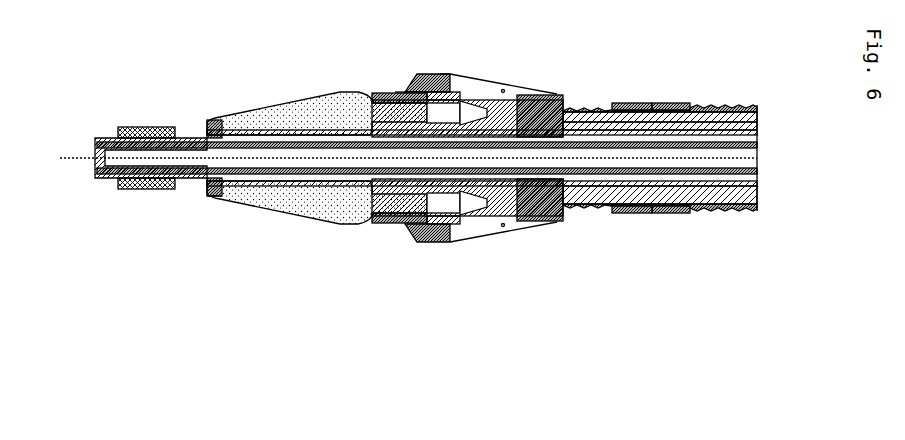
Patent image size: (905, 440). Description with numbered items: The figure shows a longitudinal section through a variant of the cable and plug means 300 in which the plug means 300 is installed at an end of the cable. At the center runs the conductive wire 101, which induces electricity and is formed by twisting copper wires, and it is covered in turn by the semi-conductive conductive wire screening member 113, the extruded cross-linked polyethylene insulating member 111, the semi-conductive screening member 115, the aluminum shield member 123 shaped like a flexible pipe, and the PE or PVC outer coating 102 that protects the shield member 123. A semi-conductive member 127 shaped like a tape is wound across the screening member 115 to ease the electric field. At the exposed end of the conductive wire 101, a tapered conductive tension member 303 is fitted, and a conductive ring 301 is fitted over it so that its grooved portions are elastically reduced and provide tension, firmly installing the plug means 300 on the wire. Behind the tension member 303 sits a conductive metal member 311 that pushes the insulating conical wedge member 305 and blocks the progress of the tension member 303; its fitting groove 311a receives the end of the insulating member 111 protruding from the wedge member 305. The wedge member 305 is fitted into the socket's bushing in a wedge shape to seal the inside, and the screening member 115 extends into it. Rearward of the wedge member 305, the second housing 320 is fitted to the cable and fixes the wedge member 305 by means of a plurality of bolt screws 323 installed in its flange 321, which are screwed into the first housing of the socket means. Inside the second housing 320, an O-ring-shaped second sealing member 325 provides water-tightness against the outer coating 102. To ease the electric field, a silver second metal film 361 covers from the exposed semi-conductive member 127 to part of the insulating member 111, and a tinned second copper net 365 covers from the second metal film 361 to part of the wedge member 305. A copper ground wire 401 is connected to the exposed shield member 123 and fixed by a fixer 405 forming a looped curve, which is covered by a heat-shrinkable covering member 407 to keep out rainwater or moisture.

The conductive wire 101 is at (757, 159).
The outer coating 102 is at (757, 102).
The insulating member 111 is at (760, 191).
The conductive wire screening member 113 is at (757, 173).
The screening member 115 is at (760, 144).
The shield member 123 is at (753, 118).
The semi-conductive member 127 is at (752, 130).
The plug means 300 is at (233, 91).
The conductive ring 301 is at (137, 127).
The tension member 303 is at (95, 173).
The wedge member 305 is at (290, 102).
The conductive metal member 311 is at (205, 191).
The fitting groove 311a is at (216, 197).
The second housing 320 is at (500, 70).
The flange 321 is at (445, 73).
The bolt screws 323 is at (418, 74).
The second sealing member 325 is at (535, 225).
The second metal film 361 is at (372, 92).
The second copper net 365 is at (403, 91).
The ground wire 401 is at (746, 104).
The fixer 405 is at (637, 103).
The covering member 407 is at (680, 103).